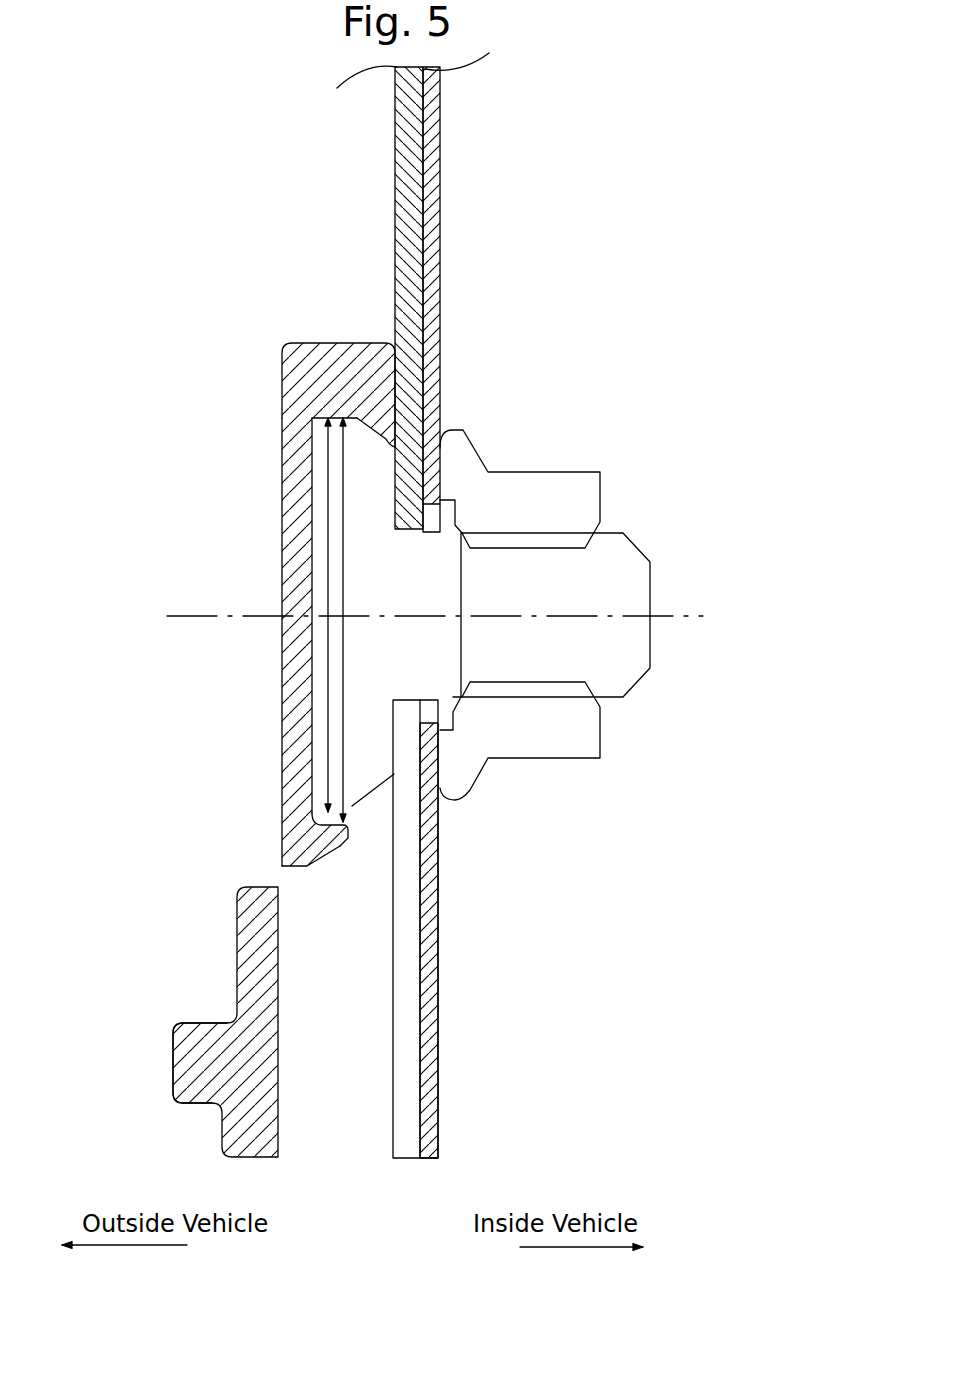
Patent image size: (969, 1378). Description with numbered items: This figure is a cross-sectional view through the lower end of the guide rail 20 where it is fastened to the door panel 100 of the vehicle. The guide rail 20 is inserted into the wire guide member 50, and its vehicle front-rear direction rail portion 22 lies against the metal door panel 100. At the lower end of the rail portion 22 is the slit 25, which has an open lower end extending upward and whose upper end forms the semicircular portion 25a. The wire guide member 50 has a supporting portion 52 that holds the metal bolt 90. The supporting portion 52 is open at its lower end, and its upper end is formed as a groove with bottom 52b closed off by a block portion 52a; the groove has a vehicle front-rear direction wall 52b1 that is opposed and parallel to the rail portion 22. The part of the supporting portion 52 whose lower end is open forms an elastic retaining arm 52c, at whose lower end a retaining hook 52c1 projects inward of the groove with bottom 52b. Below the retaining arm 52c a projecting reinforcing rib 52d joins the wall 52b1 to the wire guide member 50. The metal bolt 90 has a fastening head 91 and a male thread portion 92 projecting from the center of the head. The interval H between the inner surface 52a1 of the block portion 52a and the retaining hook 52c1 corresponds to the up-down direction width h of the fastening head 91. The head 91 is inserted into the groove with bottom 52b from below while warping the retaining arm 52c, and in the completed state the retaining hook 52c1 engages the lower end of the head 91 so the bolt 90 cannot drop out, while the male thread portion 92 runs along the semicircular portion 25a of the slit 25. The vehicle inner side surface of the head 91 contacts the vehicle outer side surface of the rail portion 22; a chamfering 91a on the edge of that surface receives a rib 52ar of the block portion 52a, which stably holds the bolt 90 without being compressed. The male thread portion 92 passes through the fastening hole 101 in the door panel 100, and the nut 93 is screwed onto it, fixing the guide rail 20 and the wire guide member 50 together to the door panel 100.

The guide rail 20 is at (383, 160).
The vehicle front-rear direction rail portion 22 is at (395, 240).
The slit 25 is at (410, 938).
The semicircular portion 25a is at (405, 529).
The wire guide member 50 is at (246, 318).
The supporting portion 52 is at (282, 392).
The block portion 52a is at (340, 388).
The rib 52ar is at (388, 437).
The inner surface 52a1 is at (322, 420).
The groove with bottom 52b is at (310, 517).
The vehicle front-rear direction wall 52b1 is at (283, 548).
The elastic retaining arm 52c is at (283, 770).
The retaining hook 52c1 is at (340, 836).
The reinforcing rib 52d is at (173, 1065).
The metal bolt 90 is at (370, 625).
The fastening head 91 is at (345, 690).
The chamfering 91a is at (375, 790).
The male thread portion 92 is at (635, 608).
The nut 93 is at (530, 737).
The door panel 100 is at (433, 283).
The fastening hole 101 is at (460, 695).
The interval H is at (346, 580).
The up-down direction width h is at (345, 655).